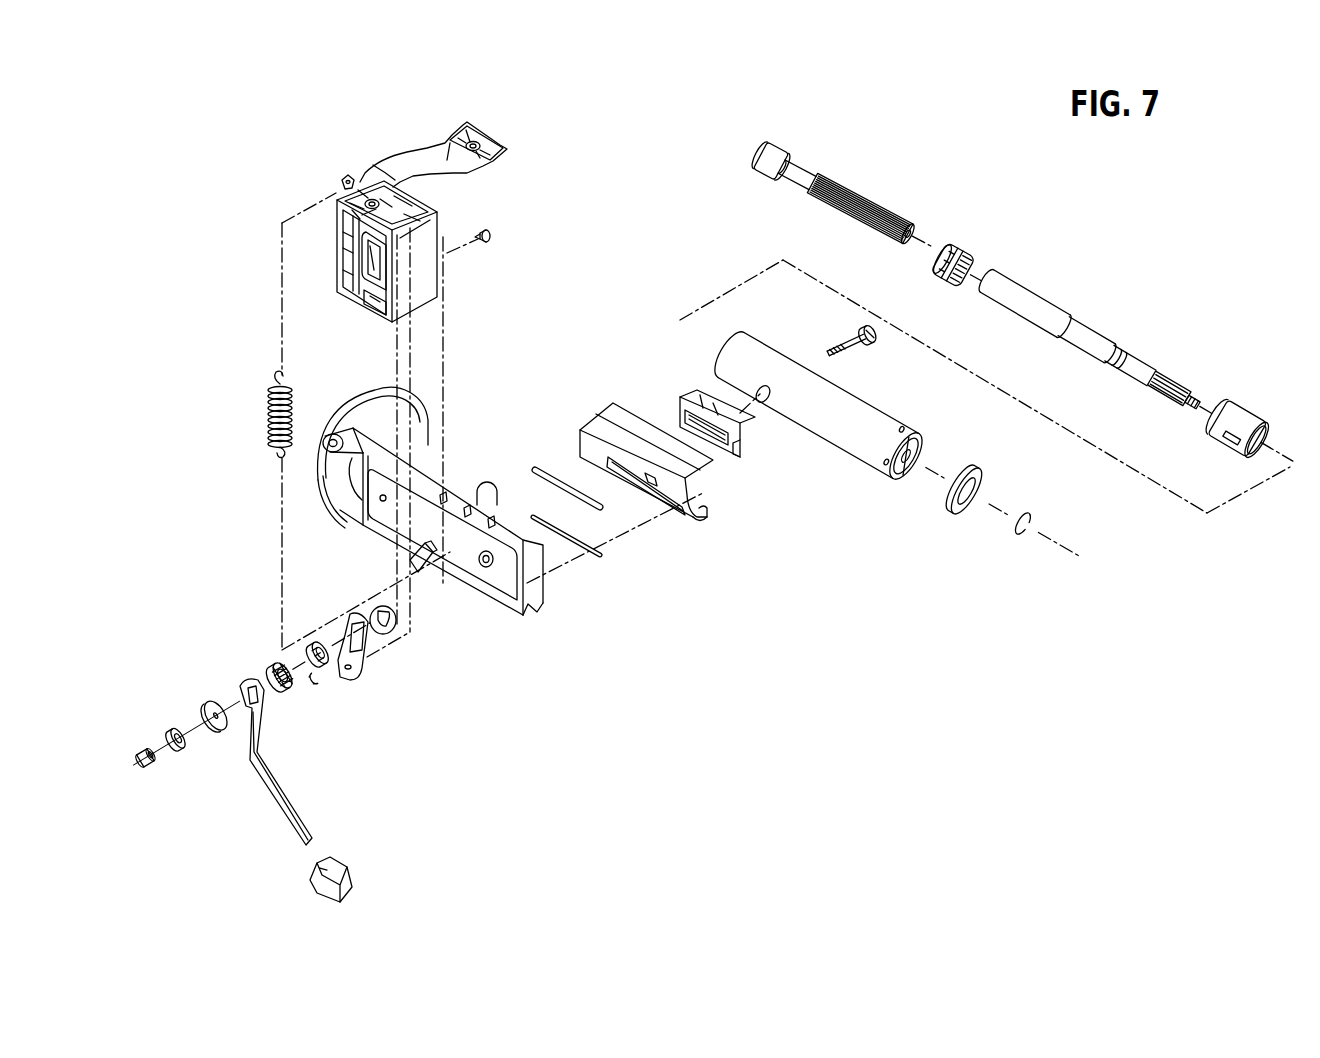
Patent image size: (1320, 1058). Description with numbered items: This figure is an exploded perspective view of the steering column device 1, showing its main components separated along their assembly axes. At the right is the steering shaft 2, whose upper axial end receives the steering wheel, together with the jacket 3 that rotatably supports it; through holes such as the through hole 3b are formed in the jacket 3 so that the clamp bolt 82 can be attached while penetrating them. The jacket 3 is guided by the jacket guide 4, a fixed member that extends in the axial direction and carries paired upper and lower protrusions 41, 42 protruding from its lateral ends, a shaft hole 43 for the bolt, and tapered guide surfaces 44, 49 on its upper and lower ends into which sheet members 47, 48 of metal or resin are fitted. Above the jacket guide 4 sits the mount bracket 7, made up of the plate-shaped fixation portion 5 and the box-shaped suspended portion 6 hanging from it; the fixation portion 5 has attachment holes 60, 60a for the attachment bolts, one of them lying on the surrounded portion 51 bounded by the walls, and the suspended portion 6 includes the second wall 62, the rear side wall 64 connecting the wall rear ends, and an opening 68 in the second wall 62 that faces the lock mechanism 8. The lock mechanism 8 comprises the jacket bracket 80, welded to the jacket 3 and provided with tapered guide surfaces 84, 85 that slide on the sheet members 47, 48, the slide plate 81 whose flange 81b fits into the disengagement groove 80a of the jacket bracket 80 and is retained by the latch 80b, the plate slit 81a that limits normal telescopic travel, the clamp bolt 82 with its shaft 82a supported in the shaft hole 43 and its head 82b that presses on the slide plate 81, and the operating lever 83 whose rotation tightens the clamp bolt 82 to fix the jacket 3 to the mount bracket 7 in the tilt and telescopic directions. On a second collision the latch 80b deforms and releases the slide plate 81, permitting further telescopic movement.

The steering column device 1 is at (687, 150).
The steering shaft 2 is at (1022, 292).
The jacket 3 is at (876, 395).
The through hole 3b is at (765, 405).
The jacket guide 4 is at (460, 470).
The fixation portion 5 is at (493, 168).
The suspended portion 6 is at (434, 225).
The mount bracket 7 is at (495, 228).
The lock mechanism 8 is at (338, 710).
The upper protrusion 41 is at (352, 520).
The lower protrusion 42 is at (386, 470).
The shaft hole 43 is at (487, 566).
The guide surface 44 is at (541, 560).
The sheet member 47 is at (535, 468).
The sheet member 48 is at (597, 560).
The guide surface 49 is at (530, 610).
The surrounded portion 51 is at (370, 200).
The attachment hole 60 is at (368, 192).
The attachment hole 60a is at (481, 140).
The second wall 62 is at (347, 302).
The rear side wall 64 is at (418, 304).
The opening 68 is at (382, 320).
The jacket bracket 80 is at (603, 405).
The disengagement groove 80a is at (650, 480).
The latch 80b is at (668, 490).
The slide plate 81 is at (690, 395).
The plate slit 81a is at (717, 438).
The flange 81b is at (683, 416).
The clamp bolt 82 is at (771, 294).
The shaft 82a is at (852, 340).
The head 82b is at (865, 328).
The operating lever 83 is at (251, 757).
The guide surface 84 is at (600, 402).
The guide surface 85 is at (703, 522).